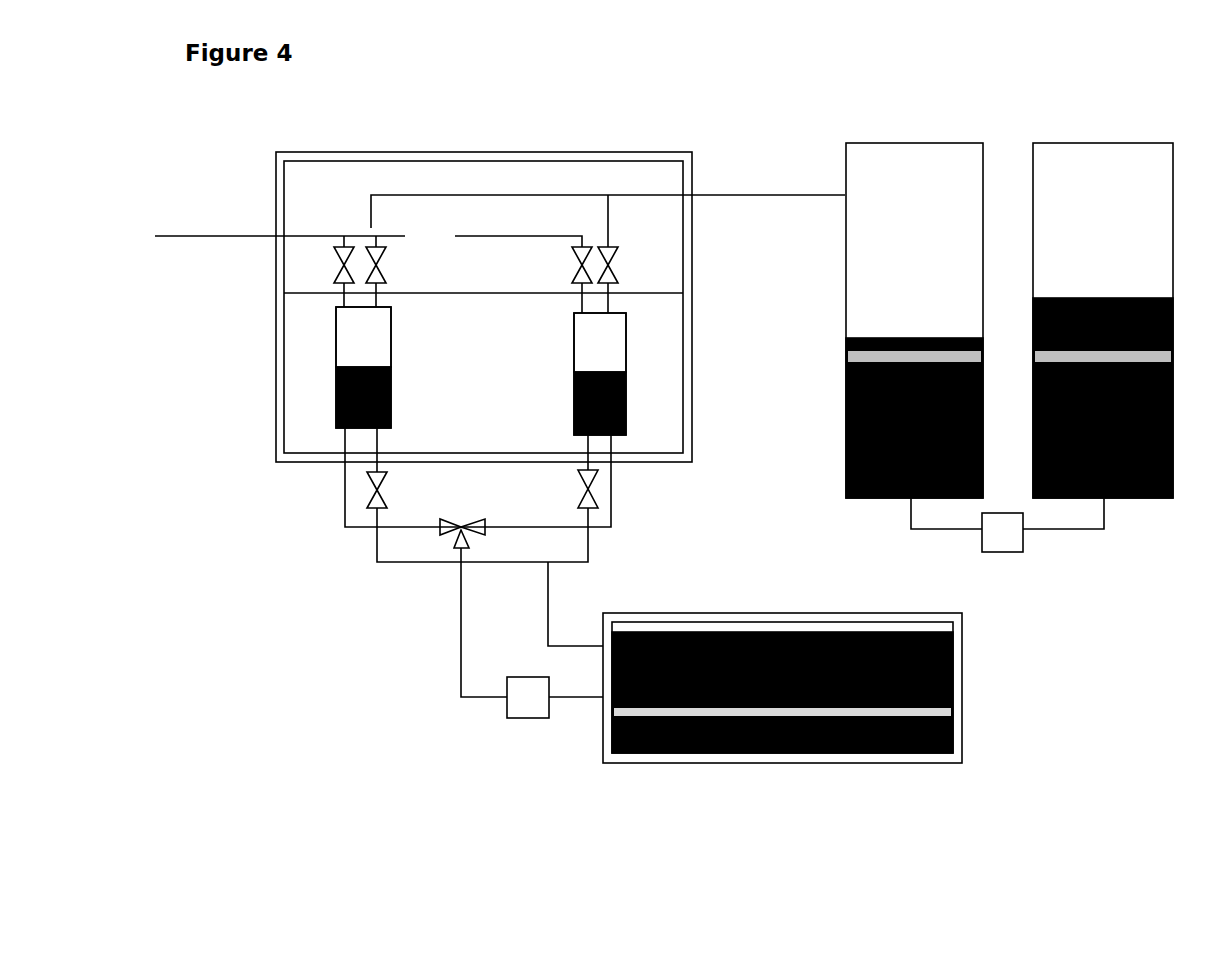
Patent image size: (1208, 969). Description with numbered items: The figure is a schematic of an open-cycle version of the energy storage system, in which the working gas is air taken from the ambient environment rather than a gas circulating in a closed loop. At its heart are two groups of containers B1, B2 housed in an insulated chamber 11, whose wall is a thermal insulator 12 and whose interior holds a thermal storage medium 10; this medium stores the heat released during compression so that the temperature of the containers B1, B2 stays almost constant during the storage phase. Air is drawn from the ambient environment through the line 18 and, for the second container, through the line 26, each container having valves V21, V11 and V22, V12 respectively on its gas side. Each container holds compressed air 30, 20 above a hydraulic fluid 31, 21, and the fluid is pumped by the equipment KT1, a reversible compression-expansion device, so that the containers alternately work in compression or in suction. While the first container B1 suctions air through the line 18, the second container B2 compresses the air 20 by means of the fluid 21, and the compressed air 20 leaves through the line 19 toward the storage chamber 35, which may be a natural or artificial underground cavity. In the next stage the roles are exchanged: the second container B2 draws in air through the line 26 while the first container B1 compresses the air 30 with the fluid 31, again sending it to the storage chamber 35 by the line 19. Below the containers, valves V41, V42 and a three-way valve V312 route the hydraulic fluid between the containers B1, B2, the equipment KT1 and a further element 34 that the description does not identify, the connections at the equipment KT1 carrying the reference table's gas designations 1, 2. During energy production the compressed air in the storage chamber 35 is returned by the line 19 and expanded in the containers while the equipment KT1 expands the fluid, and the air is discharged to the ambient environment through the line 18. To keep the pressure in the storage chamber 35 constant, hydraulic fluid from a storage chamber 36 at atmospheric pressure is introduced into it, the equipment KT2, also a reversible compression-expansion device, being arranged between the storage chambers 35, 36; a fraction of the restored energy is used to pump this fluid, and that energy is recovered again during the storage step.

The gas 1 is at (548, 607).
The gas 2 is at (462, 665).
The thermal storage medium 10 is at (297, 328).
The chamber 11 is at (275, 457).
The thermal insulator 12 is at (283, 390).
The transfer line 18 is at (178, 238).
The transfer line 19 is at (738, 197).
The compressed gas 20 is at (610, 347).
The hydraulic fluid 21 is at (627, 402).
The transfer line 26 is at (457, 237).
The compressed gas 30 is at (372, 338).
The hydraulic fluid 31 is at (390, 407).
The collecting tank 34 is at (953, 675).
The storage chamber 35 is at (902, 142).
The storage chamber 36 is at (1075, 142).
The container B1 is at (426, 361).
The container B2 is at (700, 337).
The valve V11 is at (376, 262).
The valve V12 is at (613, 253).
The valve V21 is at (342, 260).
The valve V22 is at (580, 262).
The valve V41 is at (373, 487).
The valve V42 is at (578, 488).
The three-way valve V312 is at (450, 537).
The reversible compression-expansion device KT1 is at (517, 720).
The reversible compression-expansion device KT2 is at (1025, 548).